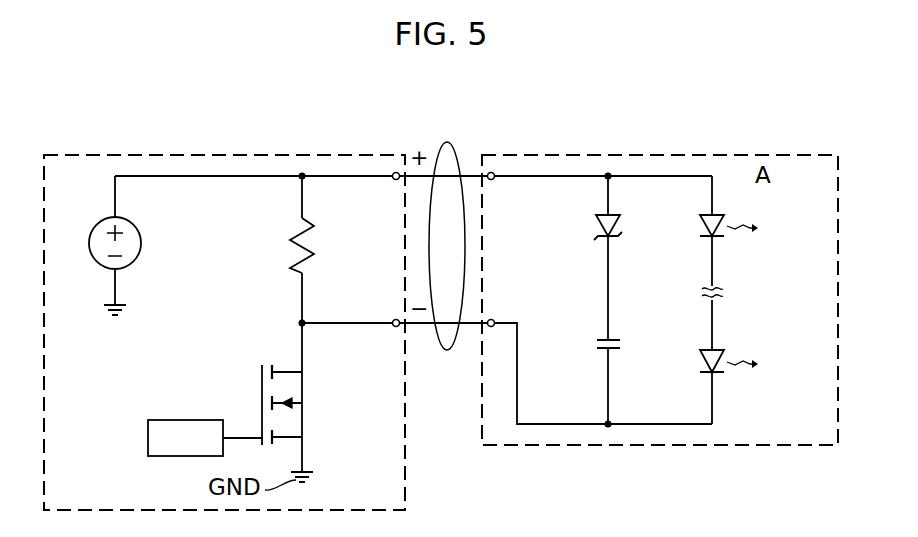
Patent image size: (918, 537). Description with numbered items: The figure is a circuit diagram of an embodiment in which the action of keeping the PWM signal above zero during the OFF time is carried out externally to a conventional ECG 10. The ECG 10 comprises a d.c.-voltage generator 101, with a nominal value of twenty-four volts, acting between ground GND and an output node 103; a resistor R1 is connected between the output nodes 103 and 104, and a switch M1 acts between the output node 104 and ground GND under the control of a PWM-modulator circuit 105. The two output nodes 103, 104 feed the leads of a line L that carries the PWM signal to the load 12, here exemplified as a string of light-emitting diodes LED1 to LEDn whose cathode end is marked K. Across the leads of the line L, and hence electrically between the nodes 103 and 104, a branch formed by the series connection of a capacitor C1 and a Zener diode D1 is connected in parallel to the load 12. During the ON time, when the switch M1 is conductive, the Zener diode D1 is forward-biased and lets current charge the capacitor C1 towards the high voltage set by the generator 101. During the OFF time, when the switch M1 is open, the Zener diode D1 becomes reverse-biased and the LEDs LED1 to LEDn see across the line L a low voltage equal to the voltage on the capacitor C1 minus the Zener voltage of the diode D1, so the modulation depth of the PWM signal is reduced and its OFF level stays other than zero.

The ECG 10 is at (213, 121).
The load 12 is at (703, 138).
The d.c.-voltage generator 101 is at (141, 240).
The output node 103 is at (393, 180).
The output node 104 is at (393, 327).
The PWM-modulator circuit 105 is at (158, 434).
The resistor R1 is at (290, 270).
The switch M1 is at (303, 425).
The Zener diode D1 is at (598, 226).
The capacitor C1 is at (605, 352).
The line L is at (453, 145).
The cathode K is at (713, 424).
The light-emitting diode LED1 is at (760, 228).
The light-emitting diode LEDn is at (760, 363).
The ground GND is at (120, 305).